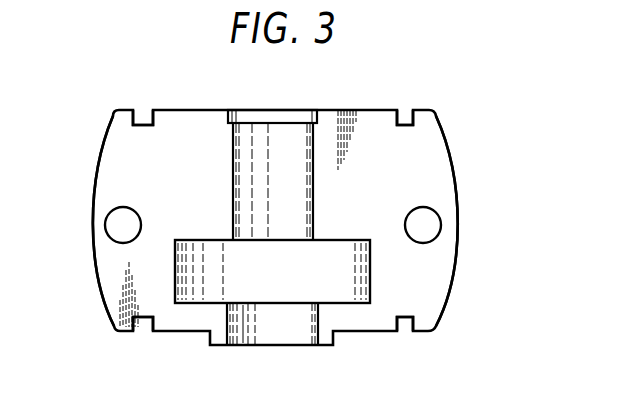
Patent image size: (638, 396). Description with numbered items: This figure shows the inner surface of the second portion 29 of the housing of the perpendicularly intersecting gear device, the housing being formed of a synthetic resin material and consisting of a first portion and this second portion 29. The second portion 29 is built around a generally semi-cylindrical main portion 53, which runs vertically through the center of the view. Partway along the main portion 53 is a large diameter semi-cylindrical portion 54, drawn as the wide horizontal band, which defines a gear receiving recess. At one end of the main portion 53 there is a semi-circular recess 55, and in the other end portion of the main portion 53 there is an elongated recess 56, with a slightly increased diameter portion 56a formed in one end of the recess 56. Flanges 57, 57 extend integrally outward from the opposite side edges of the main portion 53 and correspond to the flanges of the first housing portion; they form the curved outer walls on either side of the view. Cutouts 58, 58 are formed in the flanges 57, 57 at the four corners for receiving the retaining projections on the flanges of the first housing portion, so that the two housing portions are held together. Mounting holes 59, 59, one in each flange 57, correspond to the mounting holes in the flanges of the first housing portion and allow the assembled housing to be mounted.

The second portion 29 is at (457, 250).
The main portion 53 is at (245, 338).
The large diameter semi-cylindrical portion 54 is at (347, 270).
The semi-circular recess 55 is at (297, 327).
The elongated recess 56 is at (297, 150).
The slightly increased diameter portion 56a is at (243, 118).
The flanges 57 is at (102, 158).
The cutouts 58 is at (140, 110).
The mounting holes 59 is at (132, 215).